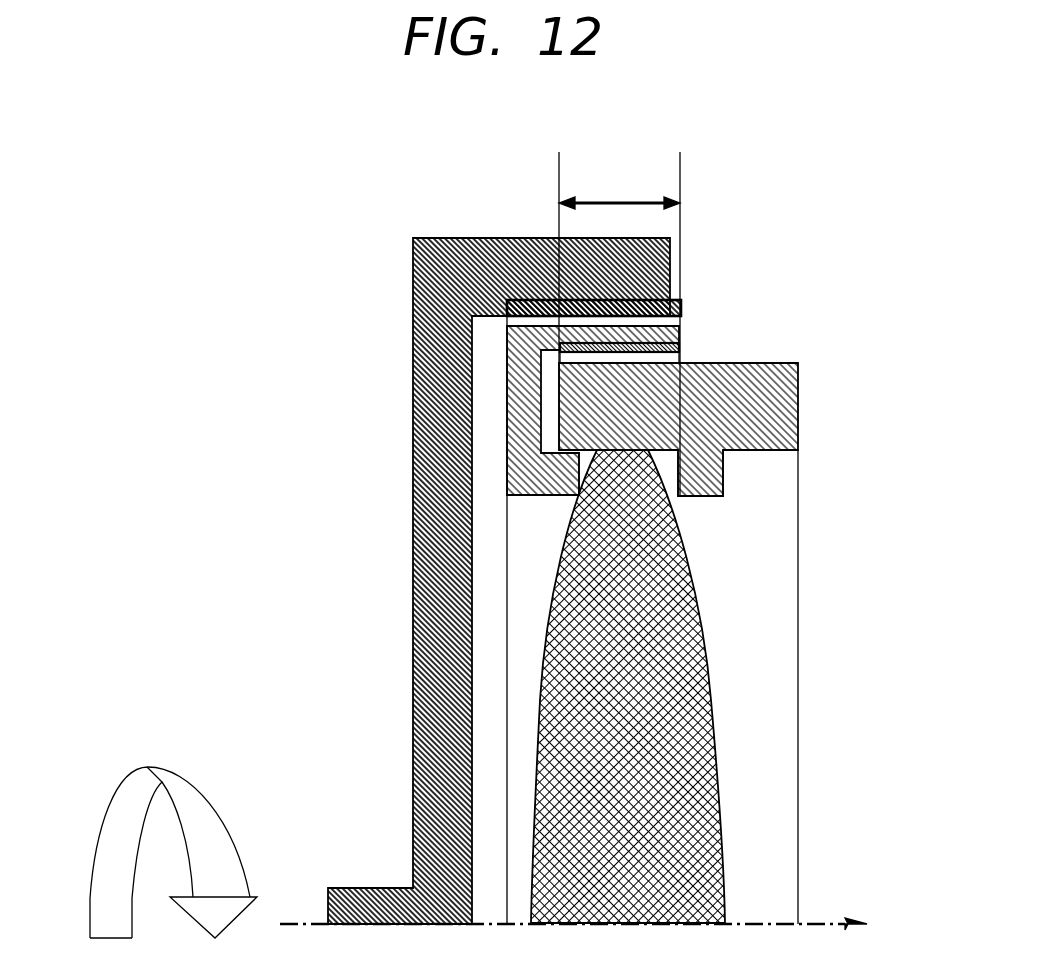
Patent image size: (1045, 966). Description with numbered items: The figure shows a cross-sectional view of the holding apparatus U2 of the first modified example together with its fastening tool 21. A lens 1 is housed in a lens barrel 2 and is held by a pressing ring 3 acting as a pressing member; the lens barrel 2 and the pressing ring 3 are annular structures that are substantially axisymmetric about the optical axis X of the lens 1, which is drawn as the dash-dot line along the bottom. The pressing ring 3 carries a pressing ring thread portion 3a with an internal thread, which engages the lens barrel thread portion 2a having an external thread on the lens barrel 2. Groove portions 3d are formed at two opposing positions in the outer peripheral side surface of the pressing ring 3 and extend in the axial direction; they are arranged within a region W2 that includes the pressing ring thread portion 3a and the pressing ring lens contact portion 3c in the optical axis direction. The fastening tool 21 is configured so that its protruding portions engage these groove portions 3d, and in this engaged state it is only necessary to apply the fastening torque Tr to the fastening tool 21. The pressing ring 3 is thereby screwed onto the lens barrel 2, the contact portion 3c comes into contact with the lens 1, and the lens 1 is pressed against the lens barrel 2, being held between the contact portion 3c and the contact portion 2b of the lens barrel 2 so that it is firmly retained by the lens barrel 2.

The lens 1 is at (680, 685).
The lens barrel 2 is at (788, 400).
The lens barrel thread portion 2a is at (674, 358).
The contact portion of the lens barrel 2b is at (682, 498).
The pressing ring 3 is at (681, 336).
The pressing ring thread portion 3a is at (681, 348).
The pressing ring lens contact portion 3c is at (577, 496).
The groove portions 3d is at (683, 316).
The fastening tool 21 is at (430, 573).
The region W2 is at (618, 198).
The holding apparatus U2 is at (848, 231).
The fastening torque Tr is at (118, 786).
The optical axis X is at (836, 922).